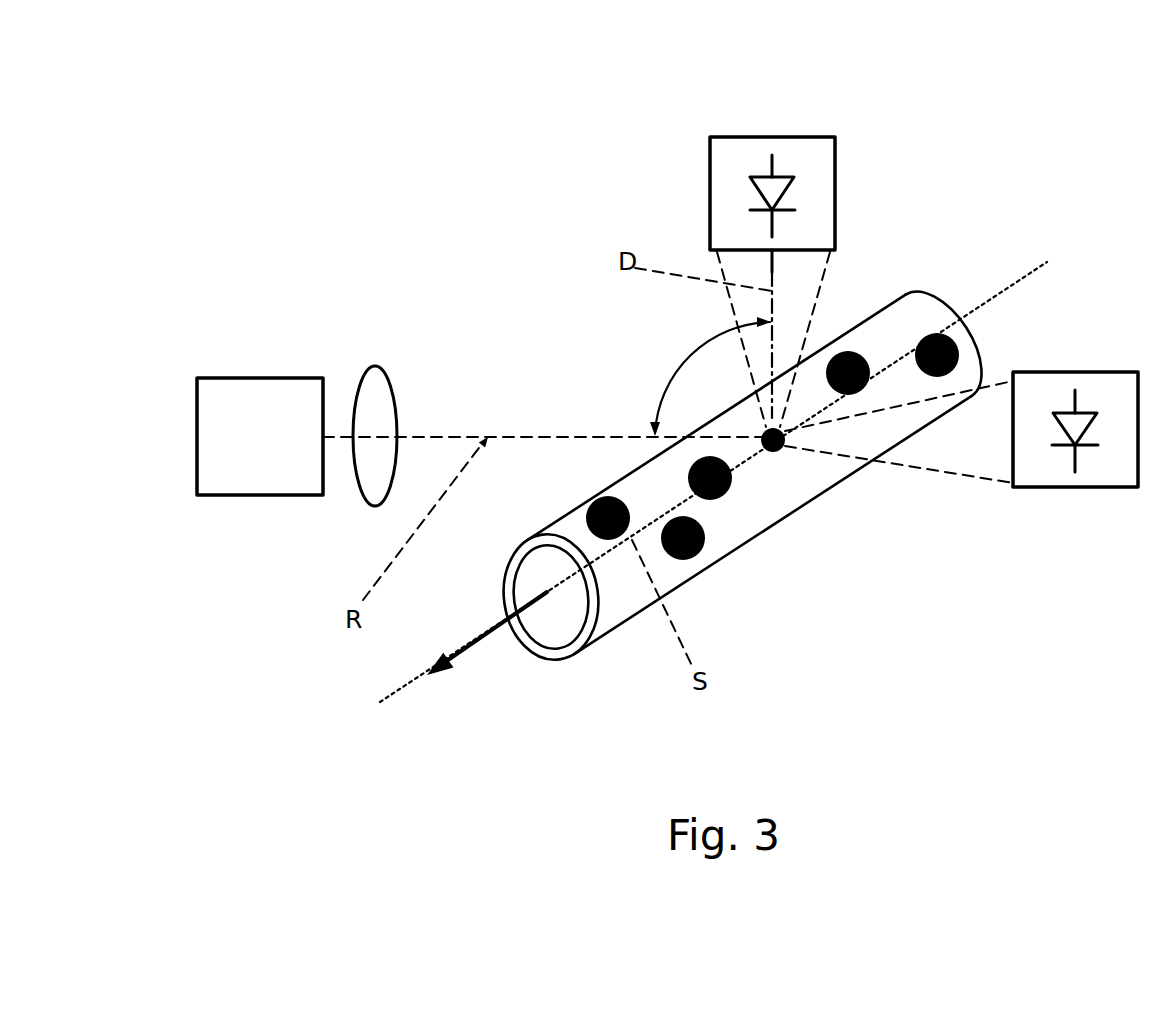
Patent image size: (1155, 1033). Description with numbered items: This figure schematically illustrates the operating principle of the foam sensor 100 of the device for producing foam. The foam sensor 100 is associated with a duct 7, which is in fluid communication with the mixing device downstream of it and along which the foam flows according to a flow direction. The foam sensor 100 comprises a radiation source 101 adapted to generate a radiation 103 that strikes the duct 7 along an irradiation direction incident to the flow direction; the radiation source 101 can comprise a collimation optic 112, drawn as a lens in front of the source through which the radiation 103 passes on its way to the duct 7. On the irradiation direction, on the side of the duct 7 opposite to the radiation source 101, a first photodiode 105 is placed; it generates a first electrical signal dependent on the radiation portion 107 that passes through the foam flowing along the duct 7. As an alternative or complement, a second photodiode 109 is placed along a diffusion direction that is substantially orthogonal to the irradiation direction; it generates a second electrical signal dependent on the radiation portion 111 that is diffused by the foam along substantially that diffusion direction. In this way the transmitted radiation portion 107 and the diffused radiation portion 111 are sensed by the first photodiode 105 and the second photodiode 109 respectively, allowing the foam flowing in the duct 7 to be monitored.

The foam sensor 100 is at (426, 188).
The radiation source 101 is at (264, 365).
The collimation optic 112 is at (376, 366).
The radiation 103 is at (526, 420).
The second photodiode 109 is at (762, 118).
The radiation portion 111 is at (842, 275).
The first photodiode 105 is at (1075, 360).
The radiation portion 107 is at (965, 494).
The duct 7 is at (742, 543).